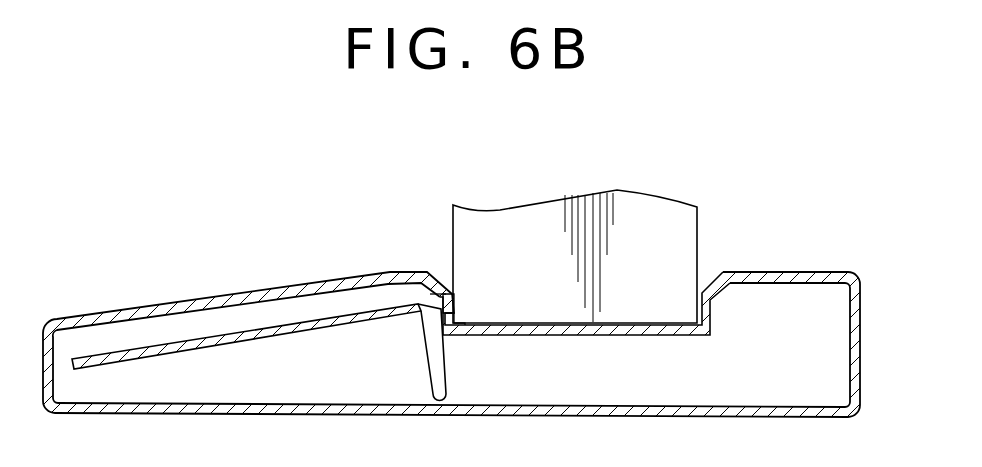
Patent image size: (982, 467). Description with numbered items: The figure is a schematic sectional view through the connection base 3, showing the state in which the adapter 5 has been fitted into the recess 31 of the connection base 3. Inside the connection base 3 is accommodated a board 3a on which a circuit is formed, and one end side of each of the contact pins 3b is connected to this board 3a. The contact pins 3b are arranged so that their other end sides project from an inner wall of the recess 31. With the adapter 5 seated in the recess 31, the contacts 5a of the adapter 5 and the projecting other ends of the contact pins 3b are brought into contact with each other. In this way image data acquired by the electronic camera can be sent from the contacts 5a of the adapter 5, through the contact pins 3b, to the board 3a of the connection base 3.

The connection base 3 is at (193, 303).
The board 3a is at (298, 321).
The contact pins 3b is at (447, 294).
The adapter 5 is at (673, 237).
The contacts 5a is at (458, 302).
The recess 31 is at (668, 317).